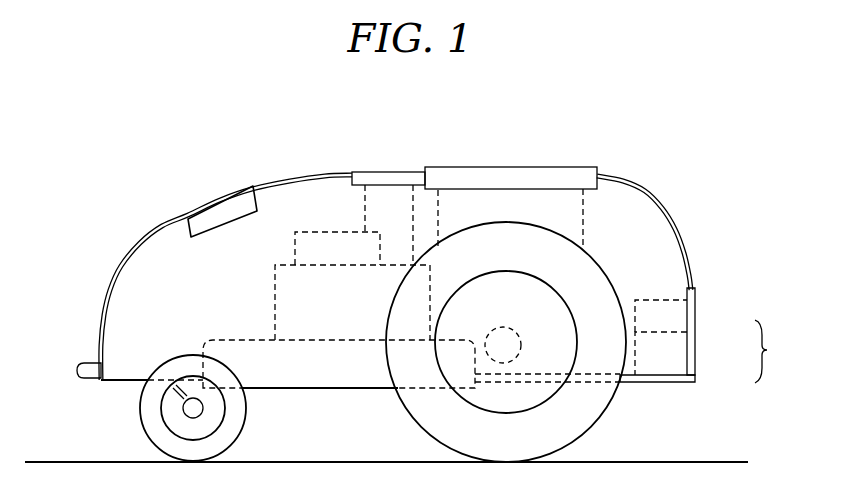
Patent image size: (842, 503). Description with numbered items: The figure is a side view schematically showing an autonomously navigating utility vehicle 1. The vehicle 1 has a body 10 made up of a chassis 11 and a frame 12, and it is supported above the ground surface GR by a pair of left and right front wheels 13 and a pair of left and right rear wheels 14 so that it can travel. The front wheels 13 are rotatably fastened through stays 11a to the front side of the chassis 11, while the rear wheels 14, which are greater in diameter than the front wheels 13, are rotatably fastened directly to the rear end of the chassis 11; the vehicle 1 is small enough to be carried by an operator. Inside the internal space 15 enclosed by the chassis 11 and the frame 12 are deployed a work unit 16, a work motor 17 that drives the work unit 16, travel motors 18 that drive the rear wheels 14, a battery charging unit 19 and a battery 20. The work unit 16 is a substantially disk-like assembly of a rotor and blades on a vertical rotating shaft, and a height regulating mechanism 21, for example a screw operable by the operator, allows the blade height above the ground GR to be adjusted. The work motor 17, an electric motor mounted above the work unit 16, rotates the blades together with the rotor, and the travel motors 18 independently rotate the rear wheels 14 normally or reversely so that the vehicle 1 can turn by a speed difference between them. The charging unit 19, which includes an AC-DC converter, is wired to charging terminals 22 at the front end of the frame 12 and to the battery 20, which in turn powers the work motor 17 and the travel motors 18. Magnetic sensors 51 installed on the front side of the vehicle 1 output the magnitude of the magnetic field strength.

The autonomously navigating utility vehicle 1 is at (648, 181).
The body 10 is at (773, 351).
The chassis 11 is at (697, 355).
The stays 11a is at (176, 407).
The frame 12 is at (692, 287).
The front wheels 13 is at (146, 432).
The rear wheels 14 is at (410, 418).
The internal space 15 is at (660, 230).
The work unit 16 is at (339, 364).
The work motor 17 is at (429, 262).
The travel motors 18 is at (505, 328).
The battery charging unit 19 is at (661, 316).
The battery 20 is at (661, 353).
The height regulating mechanism 21 is at (337, 225).
The charging terminals 22 is at (92, 363).
The magnetic sensors 51 is at (226, 194).
The ground surface GR is at (636, 462).